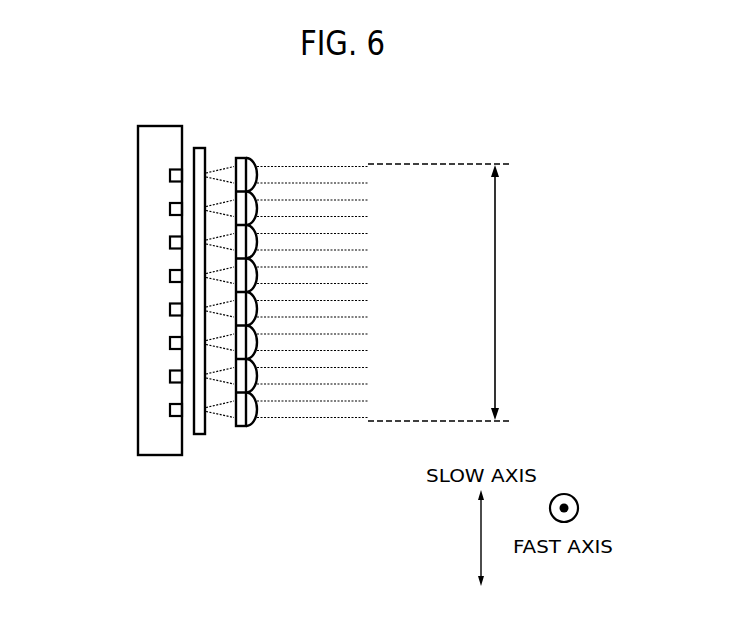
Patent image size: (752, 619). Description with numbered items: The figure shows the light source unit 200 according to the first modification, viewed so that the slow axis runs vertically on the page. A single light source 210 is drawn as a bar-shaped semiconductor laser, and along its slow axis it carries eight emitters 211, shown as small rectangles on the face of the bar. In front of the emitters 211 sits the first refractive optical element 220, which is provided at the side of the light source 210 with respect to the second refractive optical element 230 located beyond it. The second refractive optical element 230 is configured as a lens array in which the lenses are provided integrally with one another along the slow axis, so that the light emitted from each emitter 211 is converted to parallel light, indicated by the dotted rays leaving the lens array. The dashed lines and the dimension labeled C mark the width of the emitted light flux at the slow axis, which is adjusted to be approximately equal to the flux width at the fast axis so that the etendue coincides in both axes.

The light source unit 200 is at (435, 133).
The light source 210 is at (147, 153).
The emitter 211 is at (170, 176).
The first refractive optical element 220 is at (199, 147).
The second refractive optical element 230 is at (240, 157).